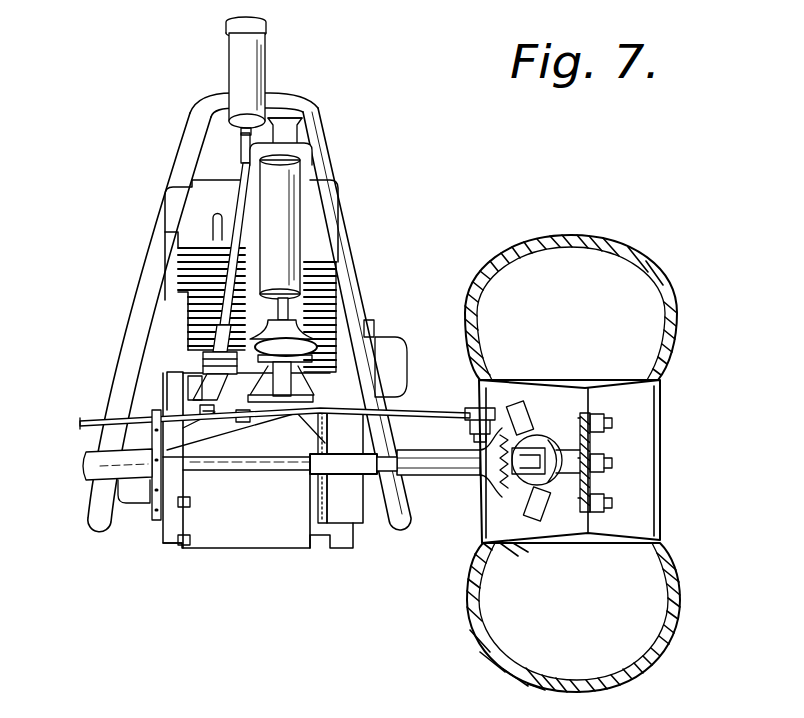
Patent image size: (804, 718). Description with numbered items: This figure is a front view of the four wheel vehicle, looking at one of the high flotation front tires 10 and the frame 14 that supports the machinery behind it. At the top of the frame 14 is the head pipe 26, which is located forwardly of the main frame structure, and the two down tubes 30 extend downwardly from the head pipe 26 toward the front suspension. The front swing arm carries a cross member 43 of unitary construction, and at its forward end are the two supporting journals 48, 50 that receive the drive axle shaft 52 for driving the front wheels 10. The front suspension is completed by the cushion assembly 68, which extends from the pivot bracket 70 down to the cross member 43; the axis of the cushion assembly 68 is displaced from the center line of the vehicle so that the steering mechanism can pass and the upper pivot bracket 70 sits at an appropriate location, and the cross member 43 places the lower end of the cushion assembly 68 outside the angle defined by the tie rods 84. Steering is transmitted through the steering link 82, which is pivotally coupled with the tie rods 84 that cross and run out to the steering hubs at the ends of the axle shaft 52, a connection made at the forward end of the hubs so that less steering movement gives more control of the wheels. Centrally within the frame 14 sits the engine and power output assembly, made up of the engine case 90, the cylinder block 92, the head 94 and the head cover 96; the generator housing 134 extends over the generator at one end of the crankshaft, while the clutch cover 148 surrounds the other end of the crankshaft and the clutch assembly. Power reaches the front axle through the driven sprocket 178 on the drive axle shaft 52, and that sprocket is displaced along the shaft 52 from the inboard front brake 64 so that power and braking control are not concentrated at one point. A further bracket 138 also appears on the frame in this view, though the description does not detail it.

The front tires 10 is at (575, 237).
The frame 14 is at (82, 540).
The head pipe 26 is at (250, 63).
The down tubes 30 is at (340, 276).
The cross member 43 is at (298, 414).
The supporting journal 48 is at (452, 478).
The supporting journal 50 is at (85, 466).
The drive axle shaft 52 is at (240, 472).
The inboard front brake 64 is at (322, 493).
The cushion assembly 68 is at (285, 216).
The pivot bracket 70 is at (287, 130).
The steering link 82 is at (210, 430).
The tie rods 84 is at (222, 312).
The engine case 90 is at (262, 548).
The cylinder block 92 is at (190, 347).
The head 94 is at (185, 272).
The head cover 96 is at (213, 190).
The generator housing 134 is at (358, 525).
The bracket 138 is at (378, 325).
The clutch cover 148 is at (170, 545).
The driven sprocket 178 is at (155, 516).